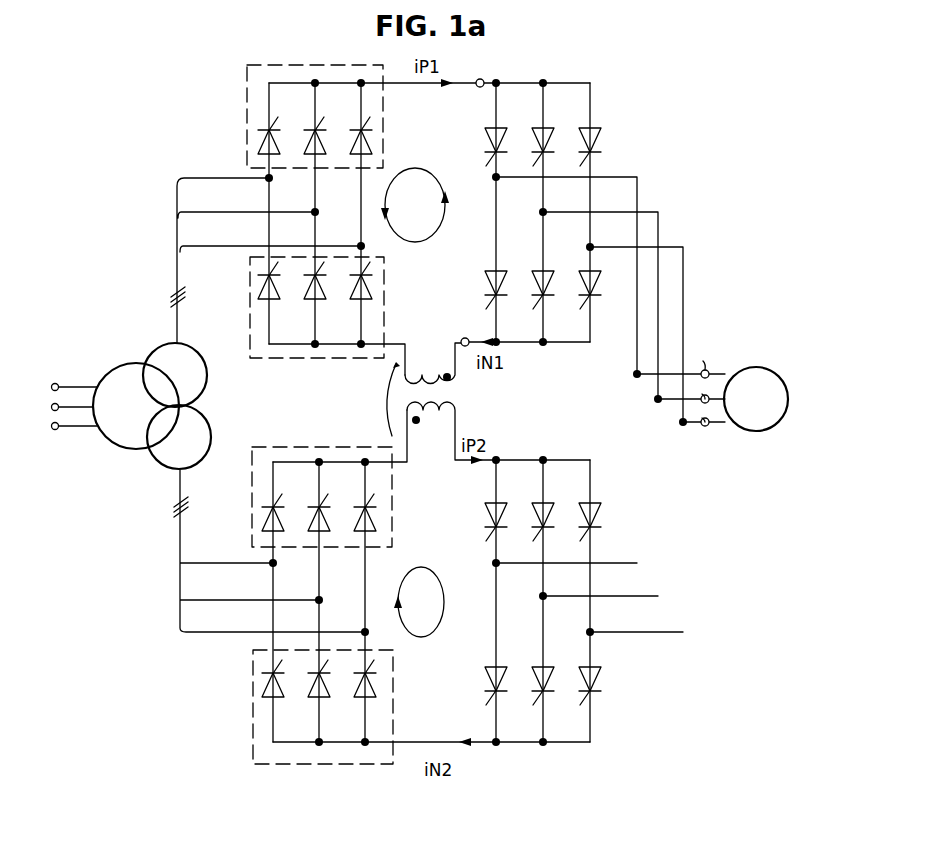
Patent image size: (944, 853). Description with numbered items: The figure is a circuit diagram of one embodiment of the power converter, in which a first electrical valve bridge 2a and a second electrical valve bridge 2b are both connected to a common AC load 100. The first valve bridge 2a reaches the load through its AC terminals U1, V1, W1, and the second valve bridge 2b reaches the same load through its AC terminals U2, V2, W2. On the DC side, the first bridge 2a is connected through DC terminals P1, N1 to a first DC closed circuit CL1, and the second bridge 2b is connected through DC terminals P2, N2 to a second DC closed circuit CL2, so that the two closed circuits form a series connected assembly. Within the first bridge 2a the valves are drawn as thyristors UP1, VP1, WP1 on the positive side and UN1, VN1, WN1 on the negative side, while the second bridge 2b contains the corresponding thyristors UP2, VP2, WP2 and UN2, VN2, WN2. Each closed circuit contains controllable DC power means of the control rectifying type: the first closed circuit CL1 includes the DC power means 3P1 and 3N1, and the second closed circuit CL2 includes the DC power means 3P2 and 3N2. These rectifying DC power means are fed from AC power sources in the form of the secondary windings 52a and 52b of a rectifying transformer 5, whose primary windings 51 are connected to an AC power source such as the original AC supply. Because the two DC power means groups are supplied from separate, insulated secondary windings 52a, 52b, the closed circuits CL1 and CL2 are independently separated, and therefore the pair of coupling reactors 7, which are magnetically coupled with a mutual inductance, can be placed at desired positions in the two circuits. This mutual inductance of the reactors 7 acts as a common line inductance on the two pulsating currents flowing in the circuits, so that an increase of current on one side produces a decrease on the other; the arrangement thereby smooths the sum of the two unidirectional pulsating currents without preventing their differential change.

The rectifying transformer 5 is at (153, 426).
The primary windings 51 is at (107, 443).
The secondary winding 52a is at (207, 379).
The secondary winding 52b is at (203, 421).
The controllable DC power means 3P1 is at (336, 65).
The controllable DC power means 3N1 is at (384, 310).
The controllable DC power means 3P2 is at (392, 513).
The controllable DC power means 3N2 is at (450, 715).
The coupling reactor 7 is at (474, 414).
The first electrical valve bridge 2a is at (464, 205).
The second electrical valve bridge 2b is at (466, 613).
The first DC closed circuit CL1 is at (417, 167).
The second DC closed circuit CL2 is at (438, 575).
The AC load 100 is at (770, 341).
The DC terminal P1 is at (481, 79).
The DC terminal N1 is at (464, 338).
The DC terminal P2 is at (545, 460).
The DC terminal N2 is at (545, 746).
The thyristor UP1 is at (506, 136).
The thyristor VP1 is at (554, 136).
The thyristor WP1 is at (603, 136).
The thyristor UN1 is at (506, 279).
The thyristor VN1 is at (554, 279).
The thyristor WN1 is at (603, 279).
The thyristor UP2 is at (506, 511).
The thyristor VP2 is at (554, 511).
The thyristor WP2 is at (603, 511).
The thyristor UN2 is at (490, 680).
The thyristor VN2 is at (536, 680).
The thyristor WN2 is at (588, 668).
The AC terminal U1 is at (498, 181).
The AC terminal V1 is at (545, 216).
The AC terminal W1 is at (592, 245).
The AC terminal U2 is at (498, 567).
The AC terminal V2 is at (545, 600).
The AC terminal W2 is at (592, 636).